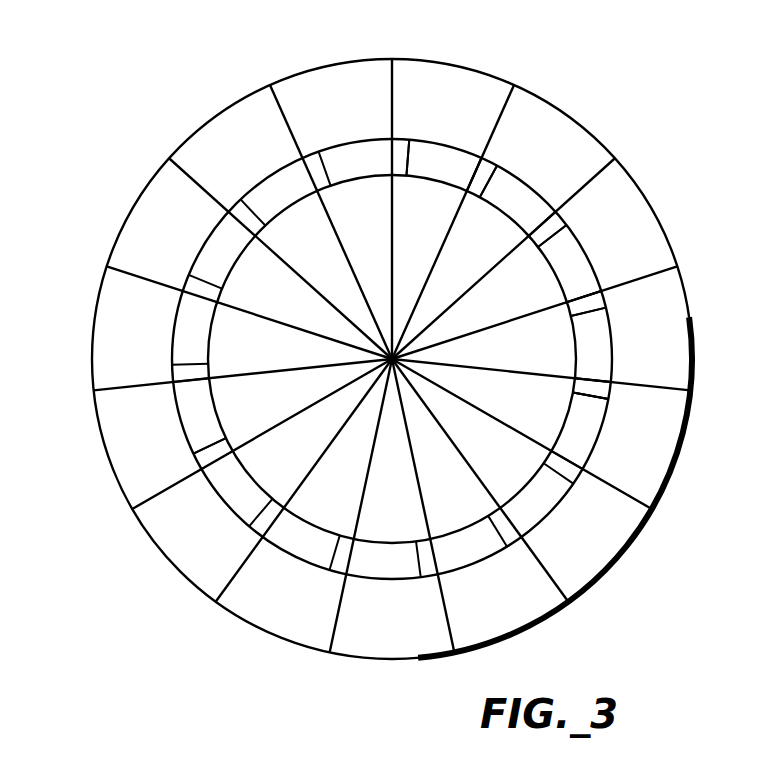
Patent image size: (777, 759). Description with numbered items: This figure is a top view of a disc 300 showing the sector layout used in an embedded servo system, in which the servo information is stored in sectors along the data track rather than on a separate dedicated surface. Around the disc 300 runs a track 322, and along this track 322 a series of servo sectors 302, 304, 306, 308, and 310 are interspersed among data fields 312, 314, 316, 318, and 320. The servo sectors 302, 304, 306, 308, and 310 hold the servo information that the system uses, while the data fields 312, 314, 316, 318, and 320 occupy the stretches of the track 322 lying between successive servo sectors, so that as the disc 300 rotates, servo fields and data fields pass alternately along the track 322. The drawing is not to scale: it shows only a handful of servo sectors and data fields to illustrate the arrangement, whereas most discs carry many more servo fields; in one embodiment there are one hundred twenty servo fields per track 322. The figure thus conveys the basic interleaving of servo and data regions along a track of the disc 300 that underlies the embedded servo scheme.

The disc 300 is at (168, 92).
The servo sector 302 is at (398, 148).
The servo sector 304 is at (518, 200).
The servo sector 306 is at (547, 235).
The servo sector 308 is at (580, 308).
The servo sector 310 is at (598, 387).
The data field 312 is at (435, 158).
The data field 314 is at (546, 215).
The data field 316 is at (570, 273).
The data field 318 is at (602, 362).
The data field 320 is at (582, 425).
The track 322 is at (170, 405).